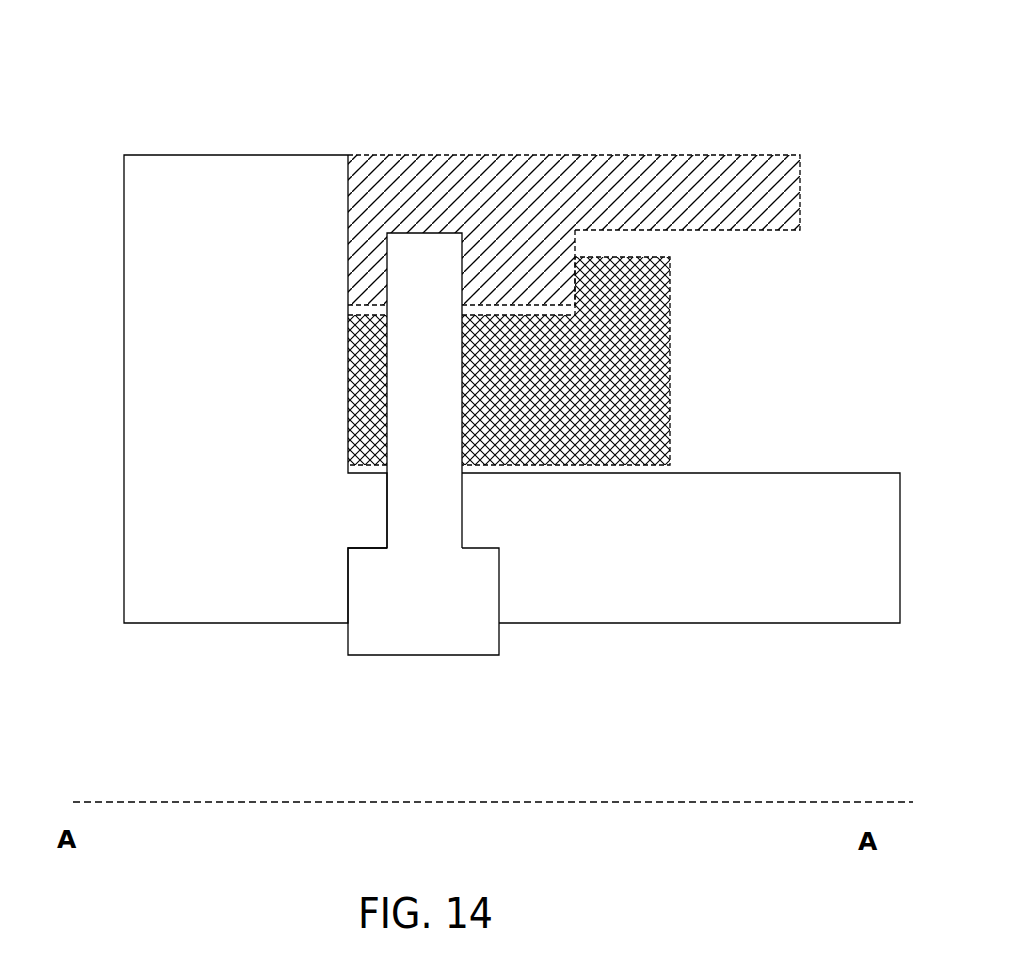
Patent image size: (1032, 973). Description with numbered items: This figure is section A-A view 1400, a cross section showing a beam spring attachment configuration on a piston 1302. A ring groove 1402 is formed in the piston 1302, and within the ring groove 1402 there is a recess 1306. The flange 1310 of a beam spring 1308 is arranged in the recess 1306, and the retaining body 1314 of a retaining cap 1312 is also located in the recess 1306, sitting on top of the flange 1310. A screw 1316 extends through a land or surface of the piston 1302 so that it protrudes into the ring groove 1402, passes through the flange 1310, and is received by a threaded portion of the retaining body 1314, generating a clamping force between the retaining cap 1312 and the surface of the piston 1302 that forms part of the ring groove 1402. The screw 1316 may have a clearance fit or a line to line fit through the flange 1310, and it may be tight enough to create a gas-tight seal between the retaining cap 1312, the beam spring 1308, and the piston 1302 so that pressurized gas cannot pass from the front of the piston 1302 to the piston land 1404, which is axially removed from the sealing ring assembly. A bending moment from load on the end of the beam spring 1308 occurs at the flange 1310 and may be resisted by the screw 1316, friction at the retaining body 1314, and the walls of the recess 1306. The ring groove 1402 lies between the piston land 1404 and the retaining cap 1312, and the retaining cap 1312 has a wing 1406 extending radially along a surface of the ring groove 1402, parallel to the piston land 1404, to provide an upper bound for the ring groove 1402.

The section A-A view 1400 is at (208, 35).
The piston 1302 is at (197, 387).
The recess 1306 is at (461, 302).
The beam spring 1308 is at (564, 465).
The flange 1310 is at (533, 437).
The retaining cap 1312 is at (632, 211).
The retaining body 1314 is at (512, 207).
The screw 1316 is at (350, 616).
The ring groove 1402 is at (559, 574).
The piston land 1404 is at (795, 472).
The wing 1406 is at (717, 190).